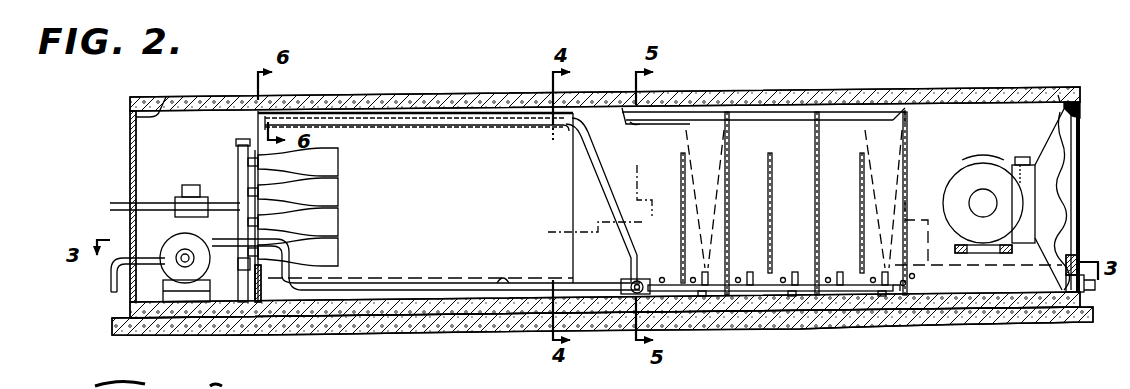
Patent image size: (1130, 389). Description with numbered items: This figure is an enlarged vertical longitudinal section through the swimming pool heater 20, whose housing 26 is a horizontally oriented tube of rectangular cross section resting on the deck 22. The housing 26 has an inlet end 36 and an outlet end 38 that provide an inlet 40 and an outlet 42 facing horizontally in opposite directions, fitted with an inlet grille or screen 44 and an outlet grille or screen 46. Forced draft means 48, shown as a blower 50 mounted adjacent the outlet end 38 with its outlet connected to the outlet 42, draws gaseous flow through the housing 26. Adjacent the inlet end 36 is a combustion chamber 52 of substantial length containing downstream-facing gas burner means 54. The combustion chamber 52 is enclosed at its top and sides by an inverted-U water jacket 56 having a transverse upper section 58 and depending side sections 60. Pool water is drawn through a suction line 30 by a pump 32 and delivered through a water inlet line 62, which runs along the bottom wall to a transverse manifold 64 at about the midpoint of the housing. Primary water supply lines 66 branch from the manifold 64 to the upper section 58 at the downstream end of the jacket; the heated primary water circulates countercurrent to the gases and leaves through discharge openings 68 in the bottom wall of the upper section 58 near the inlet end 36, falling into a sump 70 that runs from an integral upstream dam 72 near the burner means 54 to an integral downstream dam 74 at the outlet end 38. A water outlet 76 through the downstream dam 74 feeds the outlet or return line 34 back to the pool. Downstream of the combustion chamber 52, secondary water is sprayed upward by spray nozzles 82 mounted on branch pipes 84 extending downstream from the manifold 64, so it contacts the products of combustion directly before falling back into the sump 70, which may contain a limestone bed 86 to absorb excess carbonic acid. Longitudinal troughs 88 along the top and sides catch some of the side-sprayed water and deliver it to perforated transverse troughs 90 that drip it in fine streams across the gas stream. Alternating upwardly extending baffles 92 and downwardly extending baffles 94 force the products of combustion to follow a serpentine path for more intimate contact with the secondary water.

The heater 20 is at (431, 95).
The deck 22 is at (995, 318).
The housing 26 is at (712, 108).
The suction line 30 is at (108, 284).
The pump 32 is at (162, 240).
The outlet or return line 34 is at (1088, 293).
The inlet end 36 is at (162, 110).
The outlet end 38 is at (1058, 95).
The inlet 40 is at (133, 119).
The outlet 42 is at (1080, 113).
The inlet grille or screen 44 is at (130, 168).
The outlet grille or screen 46 is at (1082, 187).
The forced draft means 48 is at (969, 158).
The blower 50 is at (987, 176).
The combustion chamber 52 is at (385, 126).
The gas burner means 54 is at (318, 135).
The water jacket 56 is at (485, 112).
The upper section 58 is at (462, 110).
The side sections 60 is at (396, 262).
The water inlet line 62 is at (314, 292).
The manifold 64 is at (640, 298).
The primary water supply lines 66 is at (595, 170).
The discharge openings 68 is at (255, 137).
The sump 70 is at (509, 296).
The upstream dam 72 is at (250, 290).
The downstream dam 74 is at (1080, 265).
The water outlet 76 is at (1077, 322).
The spray nozzles 82 is at (752, 272).
The branch pipes 84 is at (843, 298).
The limestone bed 86 is at (900, 293).
The longitudinal troughs 88 is at (762, 115).
The transverse troughs 90 is at (634, 123).
The upwardly extending baffles 92 is at (681, 238).
The downwardly extending baffles 94 is at (729, 152).